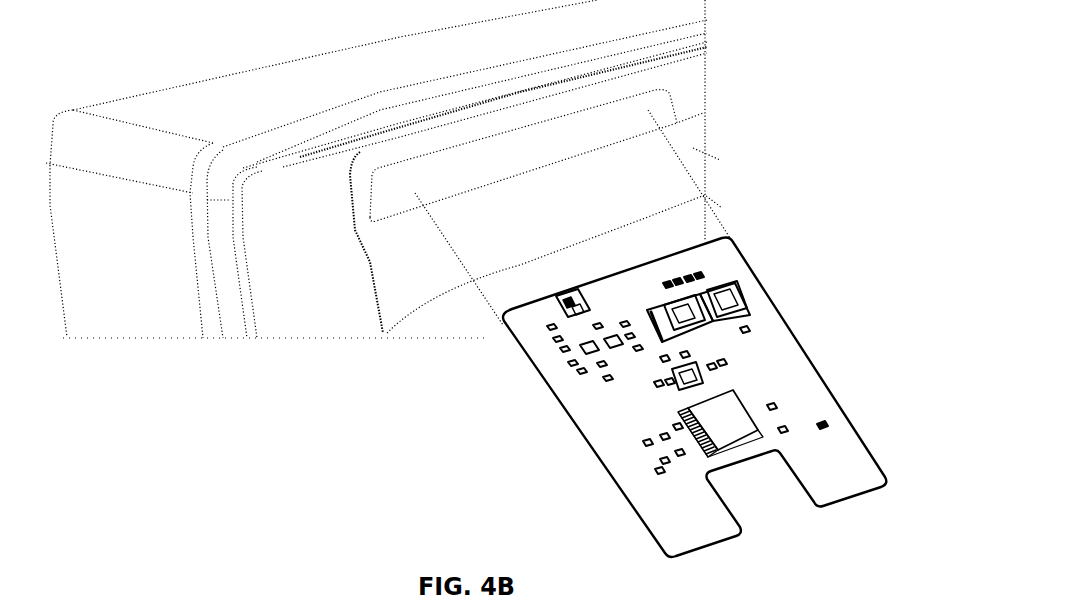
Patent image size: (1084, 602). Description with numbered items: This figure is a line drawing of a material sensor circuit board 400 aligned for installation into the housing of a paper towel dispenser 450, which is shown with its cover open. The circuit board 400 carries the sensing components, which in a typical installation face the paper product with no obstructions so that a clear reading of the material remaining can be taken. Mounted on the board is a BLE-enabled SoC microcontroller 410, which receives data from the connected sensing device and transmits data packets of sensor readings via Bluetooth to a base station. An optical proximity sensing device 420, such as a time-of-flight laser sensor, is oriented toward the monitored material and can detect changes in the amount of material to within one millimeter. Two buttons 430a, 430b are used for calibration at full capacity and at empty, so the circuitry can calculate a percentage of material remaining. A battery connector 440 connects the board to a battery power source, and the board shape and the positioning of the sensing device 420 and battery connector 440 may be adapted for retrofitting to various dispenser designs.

The material sensor circuit board 400 is at (837, 463).
The BLE-enabled SoC microcontroller 410 is at (723, 420).
The optical proximity sensing device 420 is at (697, 360).
The button 430a is at (738, 283).
The button 430b is at (663, 278).
The battery connector 440 is at (560, 300).
The paper towel dispenser 450 is at (141, 319).